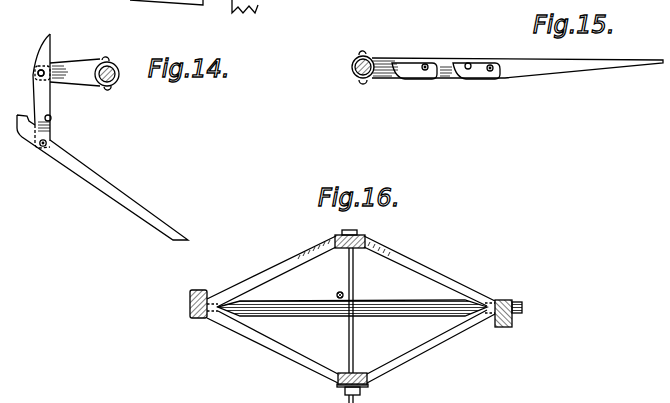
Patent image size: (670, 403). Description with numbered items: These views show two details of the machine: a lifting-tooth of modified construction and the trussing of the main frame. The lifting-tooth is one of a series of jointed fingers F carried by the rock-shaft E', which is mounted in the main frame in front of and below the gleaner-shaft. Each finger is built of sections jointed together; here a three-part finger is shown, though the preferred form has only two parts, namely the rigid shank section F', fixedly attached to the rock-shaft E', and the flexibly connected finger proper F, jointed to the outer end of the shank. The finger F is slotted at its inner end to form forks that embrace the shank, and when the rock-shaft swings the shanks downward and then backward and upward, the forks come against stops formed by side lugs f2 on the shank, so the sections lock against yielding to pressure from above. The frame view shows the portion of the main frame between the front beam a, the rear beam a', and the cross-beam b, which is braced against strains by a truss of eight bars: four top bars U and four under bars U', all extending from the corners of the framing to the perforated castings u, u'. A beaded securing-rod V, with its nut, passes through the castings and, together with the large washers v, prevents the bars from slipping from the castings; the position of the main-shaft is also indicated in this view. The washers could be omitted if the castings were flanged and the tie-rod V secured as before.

In FIG. 14, the jointed finger F is at (77, 73).
In FIG. 15, the jointed finger F is at (517, 77).
In FIG. 14, the side lug f2 is at (52, 118).
In FIG. 15, the side lug f2 is at (407, 62).
In FIG. 15, the rock-shaft E' is at (343, 73).
In FIG. 15, the shank section F' is at (385, 57).
In FIG. 16, the front beam a is at (195, 304).
In FIG. 16, the rear beam a' is at (508, 324).
In FIG. 16, the cross-beam b is at (352, 316).
In FIG. 16, the top truss bar U is at (351, 271).
In FIG. 16, the under truss bar U' is at (351, 346).
In FIG. 16, the beaded securing-rod V is at (361, 325).
In FIG. 16, the washer v is at (354, 388).
In FIG. 16, the upper block v' is at (344, 234).
In FIG. 16, the perforated casting u is at (381, 228).
In FIG. 16, the perforated casting u' is at (364, 361).
In FIG. 16, the main shaft main-shaft is at (335, 289).